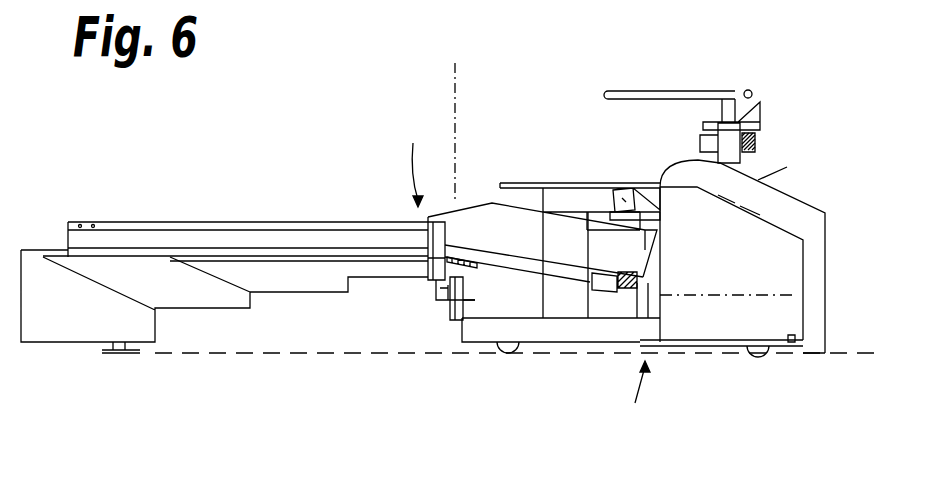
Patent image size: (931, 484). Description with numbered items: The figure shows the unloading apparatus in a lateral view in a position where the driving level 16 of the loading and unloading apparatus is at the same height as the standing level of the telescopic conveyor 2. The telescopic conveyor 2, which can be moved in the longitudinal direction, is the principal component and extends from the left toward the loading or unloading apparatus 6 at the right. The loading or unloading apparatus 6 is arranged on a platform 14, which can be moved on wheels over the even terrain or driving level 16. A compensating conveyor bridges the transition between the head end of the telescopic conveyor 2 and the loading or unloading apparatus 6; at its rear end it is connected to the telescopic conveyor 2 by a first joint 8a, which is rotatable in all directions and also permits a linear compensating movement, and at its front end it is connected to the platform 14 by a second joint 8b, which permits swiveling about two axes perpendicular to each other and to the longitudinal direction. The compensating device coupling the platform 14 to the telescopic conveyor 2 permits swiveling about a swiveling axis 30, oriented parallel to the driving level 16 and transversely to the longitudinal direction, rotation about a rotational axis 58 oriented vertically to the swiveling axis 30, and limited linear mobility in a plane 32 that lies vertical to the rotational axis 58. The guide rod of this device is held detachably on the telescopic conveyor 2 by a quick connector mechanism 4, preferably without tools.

The telescopic conveyor 2 is at (190, 205).
The quick connector mechanism 4 is at (442, 332).
The loading or unloading apparatus 6 is at (785, 133).
The first joint 8a is at (420, 156).
The second joint 8b is at (636, 400).
The platform 14 is at (732, 340).
The driving level 16 is at (357, 353).
The swiveling axis 30 is at (435, 311).
The plane 32 is at (458, 125).
The rotational axis 58 is at (712, 295).